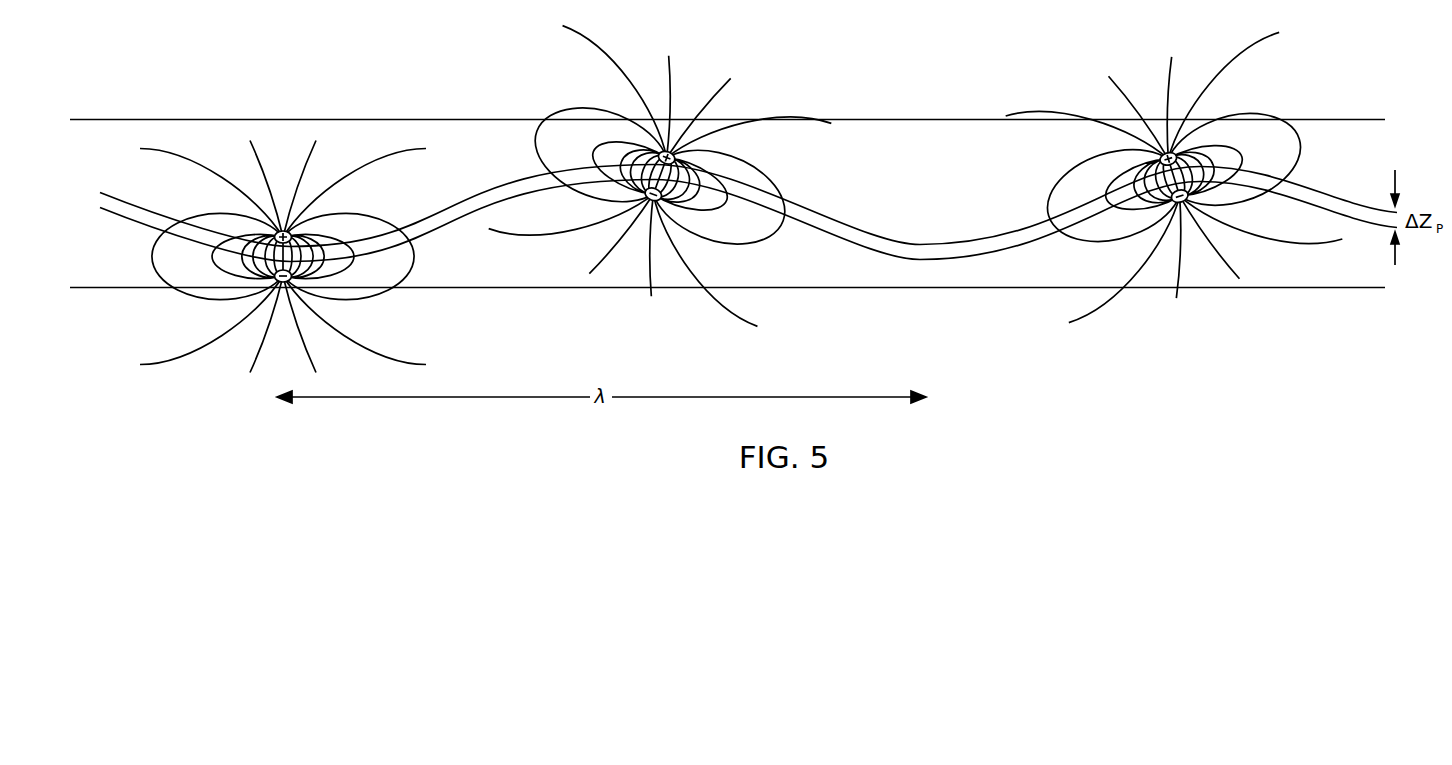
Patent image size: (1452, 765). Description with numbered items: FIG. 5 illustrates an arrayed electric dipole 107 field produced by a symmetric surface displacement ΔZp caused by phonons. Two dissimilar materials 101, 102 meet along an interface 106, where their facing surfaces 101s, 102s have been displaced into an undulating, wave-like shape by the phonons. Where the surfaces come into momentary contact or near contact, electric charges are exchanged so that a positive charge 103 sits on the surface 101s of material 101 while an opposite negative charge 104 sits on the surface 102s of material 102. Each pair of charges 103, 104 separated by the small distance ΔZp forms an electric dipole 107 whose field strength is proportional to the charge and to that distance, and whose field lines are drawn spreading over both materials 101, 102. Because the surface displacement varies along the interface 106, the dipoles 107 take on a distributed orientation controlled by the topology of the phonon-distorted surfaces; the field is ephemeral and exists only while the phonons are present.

The material 101 is at (858, 115).
The material 102 is at (878, 290).
The surface 101s is at (478, 188).
The surface 102s is at (440, 240).
The interface 106 is at (748, 216).
The positive charge 103 is at (683, 145).
The negative charge 104 is at (663, 205).
The electric dipole 107 is at (706, 172).